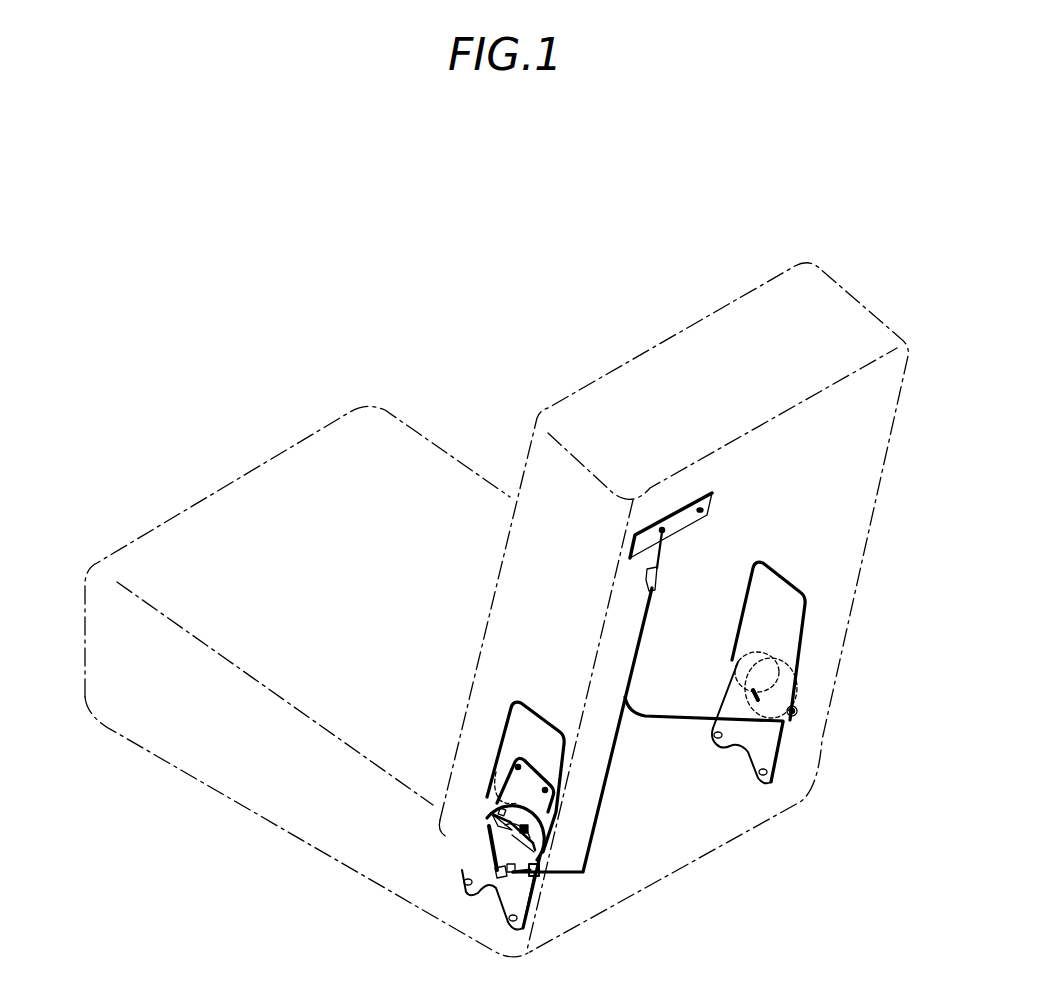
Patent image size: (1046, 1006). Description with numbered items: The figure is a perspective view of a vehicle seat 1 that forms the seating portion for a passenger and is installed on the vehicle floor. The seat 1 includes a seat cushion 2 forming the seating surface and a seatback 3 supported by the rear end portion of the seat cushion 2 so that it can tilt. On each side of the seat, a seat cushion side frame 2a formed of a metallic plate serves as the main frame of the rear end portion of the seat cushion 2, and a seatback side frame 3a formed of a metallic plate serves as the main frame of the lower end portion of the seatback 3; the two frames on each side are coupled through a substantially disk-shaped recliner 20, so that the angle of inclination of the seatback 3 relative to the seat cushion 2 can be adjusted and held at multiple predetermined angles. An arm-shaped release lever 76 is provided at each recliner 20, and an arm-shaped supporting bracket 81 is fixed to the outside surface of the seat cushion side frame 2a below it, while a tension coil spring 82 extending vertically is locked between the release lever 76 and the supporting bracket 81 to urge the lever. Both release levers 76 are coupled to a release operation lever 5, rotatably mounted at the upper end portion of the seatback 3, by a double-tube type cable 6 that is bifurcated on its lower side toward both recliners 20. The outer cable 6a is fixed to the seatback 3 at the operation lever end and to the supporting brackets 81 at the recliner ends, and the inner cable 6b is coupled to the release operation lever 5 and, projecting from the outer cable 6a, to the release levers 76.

The seat 1 is at (386, 309).
The seat cushion 2 is at (173, 513).
The seat cushion side frame 2a is at (782, 750).
The seatback 3 is at (867, 553).
The seatback side frame 3a is at (777, 573).
The release operation lever 5 is at (713, 500).
The cable 6 is at (640, 640).
The outer cable 6a is at (631, 673).
The inner cable 6b is at (660, 553).
The recliner 20 is at (800, 664).
The release lever 76 is at (492, 818).
The supporting bracket 81 is at (535, 872).
The tension coil spring 82 is at (483, 847).